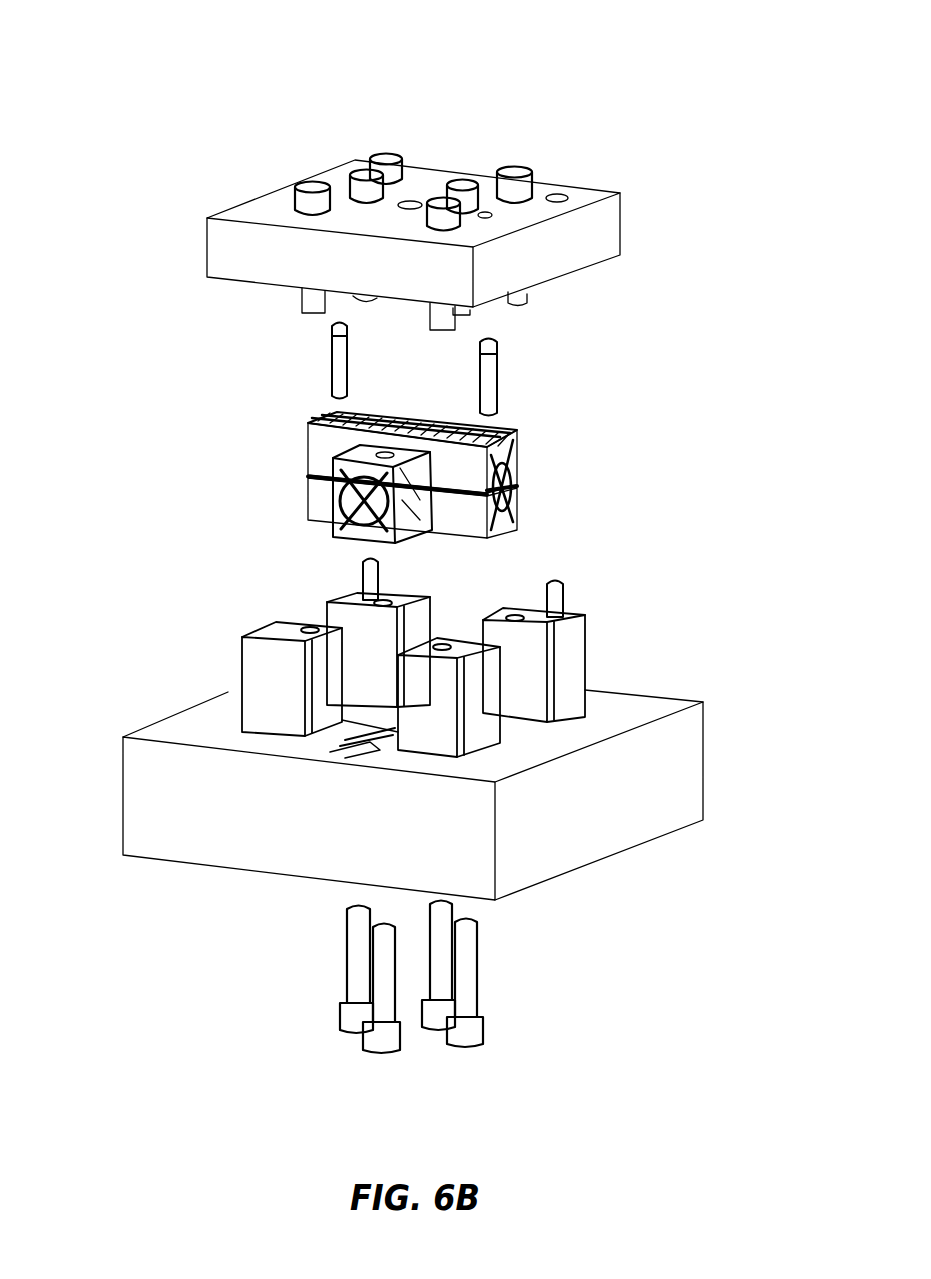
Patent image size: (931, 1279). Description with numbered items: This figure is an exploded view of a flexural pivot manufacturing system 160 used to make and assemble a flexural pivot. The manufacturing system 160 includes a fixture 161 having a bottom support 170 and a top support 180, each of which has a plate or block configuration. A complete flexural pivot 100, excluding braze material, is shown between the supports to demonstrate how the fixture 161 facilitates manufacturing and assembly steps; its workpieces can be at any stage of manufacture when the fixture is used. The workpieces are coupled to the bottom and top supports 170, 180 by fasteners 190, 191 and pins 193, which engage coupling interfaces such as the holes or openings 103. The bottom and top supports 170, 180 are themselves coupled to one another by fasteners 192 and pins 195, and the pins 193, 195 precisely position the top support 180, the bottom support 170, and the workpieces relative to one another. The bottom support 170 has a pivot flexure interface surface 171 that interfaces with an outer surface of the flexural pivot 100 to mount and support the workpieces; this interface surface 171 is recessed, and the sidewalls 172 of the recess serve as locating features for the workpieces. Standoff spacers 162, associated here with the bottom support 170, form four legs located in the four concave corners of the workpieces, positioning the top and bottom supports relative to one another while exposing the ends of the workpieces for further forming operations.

The flexural pivot manufacturing system 160 is at (303, 50).
The fixture 161 is at (167, 208).
The top support 180 is at (622, 173).
The fastener 190 is at (460, 183).
The fastener 192 is at (305, 183).
The pin 193 is at (500, 370).
The flexural pivot 100 is at (292, 405).
The holes or openings 103 is at (458, 420).
The pin 195 is at (563, 590).
The standoff spacer 162 is at (240, 672).
The bottom support 170 is at (703, 673).
The interface surface 171 is at (375, 725).
The sidewalls 172 is at (363, 707).
The fastener 191 is at (478, 965).